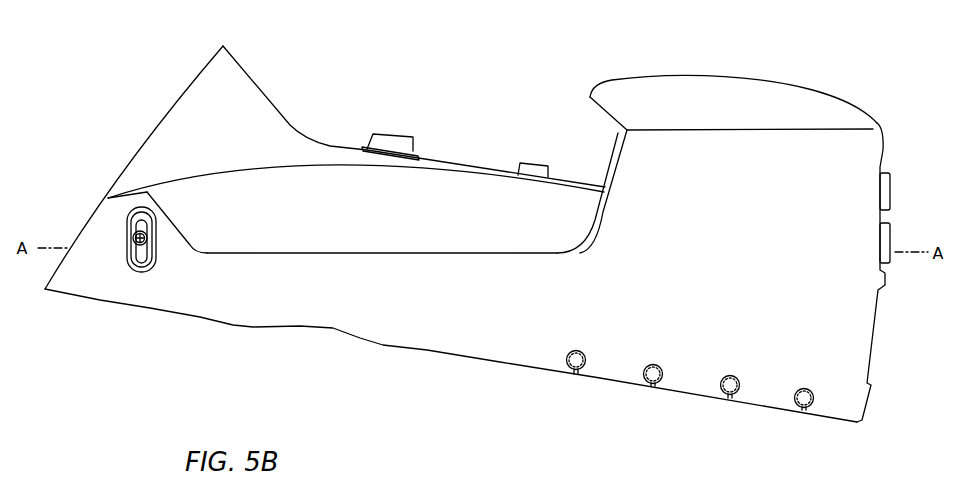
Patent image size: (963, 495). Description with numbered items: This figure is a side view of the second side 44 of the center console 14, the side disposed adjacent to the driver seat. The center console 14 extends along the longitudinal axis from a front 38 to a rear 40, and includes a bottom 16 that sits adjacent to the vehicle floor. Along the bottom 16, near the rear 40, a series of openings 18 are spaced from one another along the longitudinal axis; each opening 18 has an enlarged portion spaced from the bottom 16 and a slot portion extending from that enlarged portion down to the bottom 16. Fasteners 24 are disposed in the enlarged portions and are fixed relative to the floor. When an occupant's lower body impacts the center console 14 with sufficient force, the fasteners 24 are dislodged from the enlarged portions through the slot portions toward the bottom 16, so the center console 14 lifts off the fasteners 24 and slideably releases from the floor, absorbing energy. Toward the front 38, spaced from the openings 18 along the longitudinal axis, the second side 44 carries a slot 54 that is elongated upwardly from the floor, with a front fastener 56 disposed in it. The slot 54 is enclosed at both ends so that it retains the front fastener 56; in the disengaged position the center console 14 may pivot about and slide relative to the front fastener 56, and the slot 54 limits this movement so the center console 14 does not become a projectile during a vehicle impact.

The center console 14 is at (417, 76).
The bottom 16 is at (427, 352).
The openings 18 is at (576, 377).
The fasteners 24 is at (574, 351).
The front 38 is at (143, 138).
The rear 40 is at (871, 347).
The second side 44 is at (397, 209).
The slots 54 is at (137, 252).
The front fastener 56 is at (135, 208).